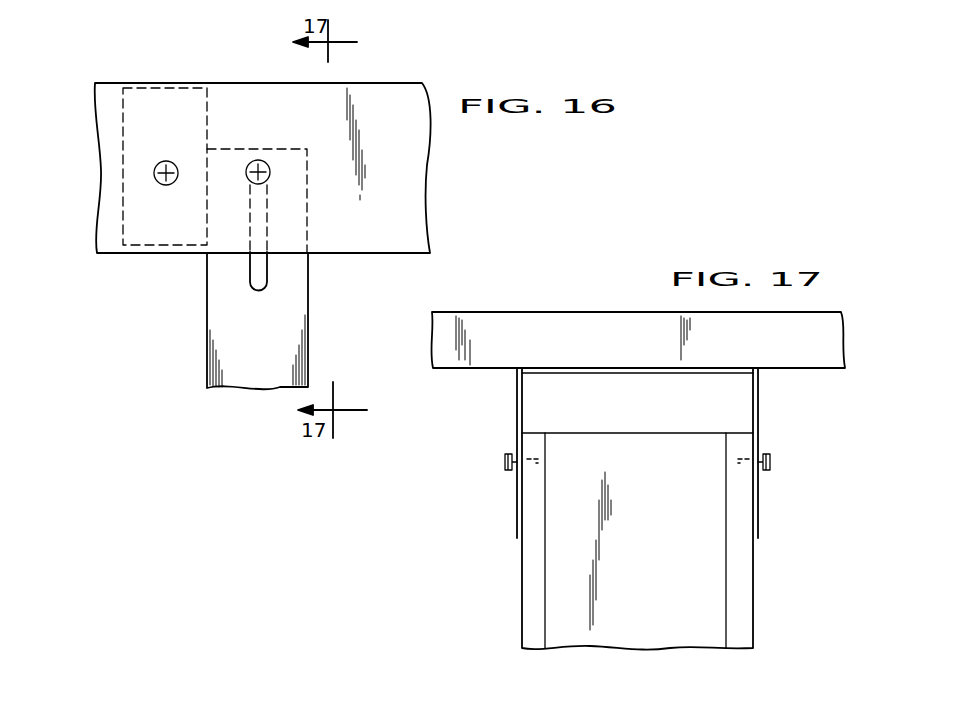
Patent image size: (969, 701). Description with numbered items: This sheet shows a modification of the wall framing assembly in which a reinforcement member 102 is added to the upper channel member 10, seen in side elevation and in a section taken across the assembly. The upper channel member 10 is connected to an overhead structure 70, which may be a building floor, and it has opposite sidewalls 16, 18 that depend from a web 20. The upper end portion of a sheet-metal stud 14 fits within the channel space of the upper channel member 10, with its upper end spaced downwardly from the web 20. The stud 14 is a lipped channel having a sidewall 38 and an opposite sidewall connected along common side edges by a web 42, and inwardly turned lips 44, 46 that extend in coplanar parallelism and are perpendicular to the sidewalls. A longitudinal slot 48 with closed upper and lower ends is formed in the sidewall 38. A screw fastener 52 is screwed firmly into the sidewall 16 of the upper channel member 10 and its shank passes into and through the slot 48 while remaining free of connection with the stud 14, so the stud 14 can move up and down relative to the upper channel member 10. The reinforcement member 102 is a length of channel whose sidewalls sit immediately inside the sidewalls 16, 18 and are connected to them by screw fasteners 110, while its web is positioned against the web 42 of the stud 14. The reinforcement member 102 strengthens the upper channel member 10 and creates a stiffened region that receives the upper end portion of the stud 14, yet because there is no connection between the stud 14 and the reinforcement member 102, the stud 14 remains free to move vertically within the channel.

In FIG. 16, the upper channel member 10 is at (147, 60).
In FIG. 16, the stud 14 is at (192, 356).
In FIG. 17, the stud 14 is at (500, 595).
In FIG. 16, the sidewall 16 is at (412, 185).
In FIG. 17, the sidewall 16 is at (517, 498).
In FIG. 17, the sidewall 18 is at (758, 502).
In FIG. 17, the web 20 is at (628, 373).
In FIG. 16, the sidewall 38 is at (230, 370).
In FIG. 17, the web 42 is at (707, 557).
In FIG. 17, the lip 44 is at (545, 565).
In FIG. 17, the lip 46 is at (727, 600).
In FIG. 16, the longitudinal slot 48 is at (247, 278).
In FIG. 16, the screw fastener 52 is at (261, 160).
In FIG. 17, the overhead structure 70 is at (577, 325).
In FIG. 16, the reinforcement member 102 is at (150, 223).
In FIG. 17, the reinforcement member 102 is at (730, 407).
In FIG. 16, the screw fastener 110 is at (155, 162).